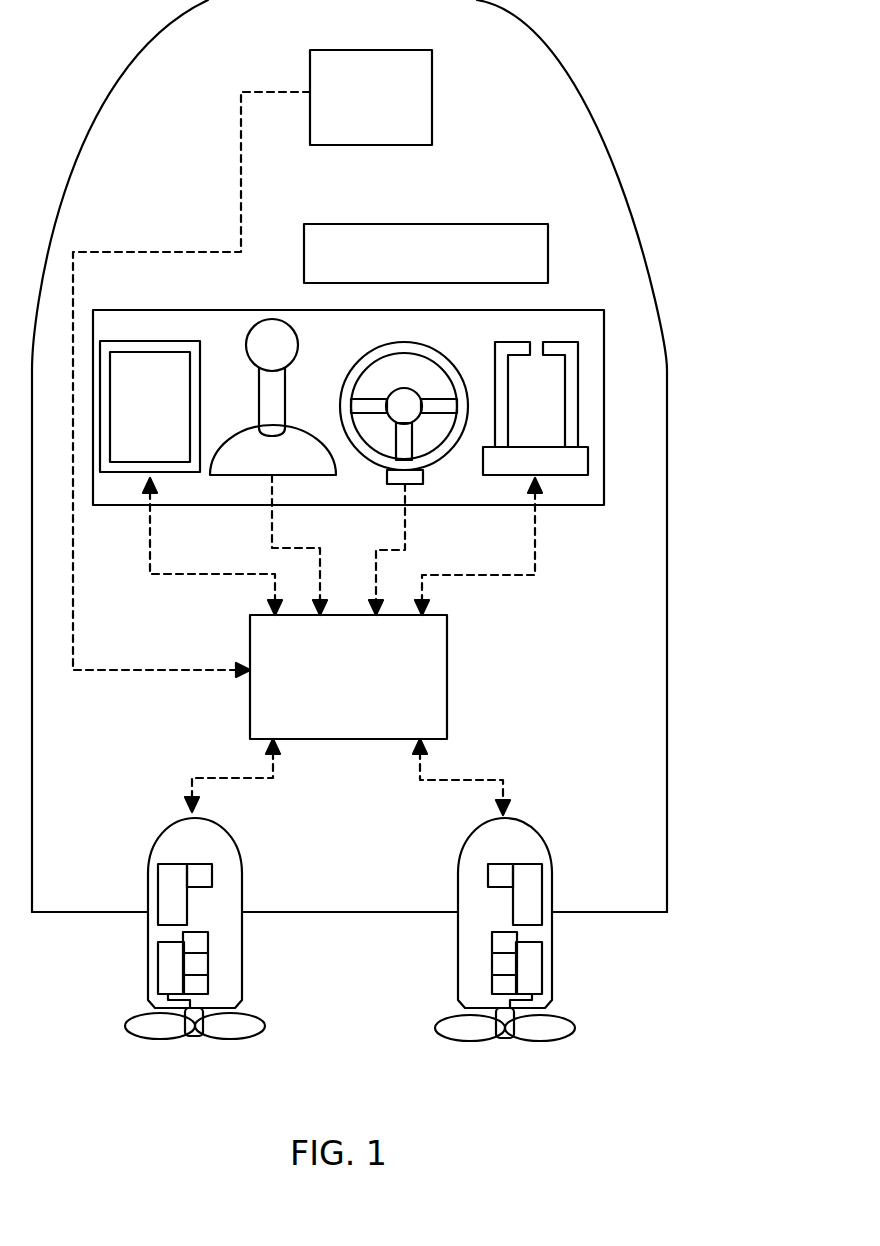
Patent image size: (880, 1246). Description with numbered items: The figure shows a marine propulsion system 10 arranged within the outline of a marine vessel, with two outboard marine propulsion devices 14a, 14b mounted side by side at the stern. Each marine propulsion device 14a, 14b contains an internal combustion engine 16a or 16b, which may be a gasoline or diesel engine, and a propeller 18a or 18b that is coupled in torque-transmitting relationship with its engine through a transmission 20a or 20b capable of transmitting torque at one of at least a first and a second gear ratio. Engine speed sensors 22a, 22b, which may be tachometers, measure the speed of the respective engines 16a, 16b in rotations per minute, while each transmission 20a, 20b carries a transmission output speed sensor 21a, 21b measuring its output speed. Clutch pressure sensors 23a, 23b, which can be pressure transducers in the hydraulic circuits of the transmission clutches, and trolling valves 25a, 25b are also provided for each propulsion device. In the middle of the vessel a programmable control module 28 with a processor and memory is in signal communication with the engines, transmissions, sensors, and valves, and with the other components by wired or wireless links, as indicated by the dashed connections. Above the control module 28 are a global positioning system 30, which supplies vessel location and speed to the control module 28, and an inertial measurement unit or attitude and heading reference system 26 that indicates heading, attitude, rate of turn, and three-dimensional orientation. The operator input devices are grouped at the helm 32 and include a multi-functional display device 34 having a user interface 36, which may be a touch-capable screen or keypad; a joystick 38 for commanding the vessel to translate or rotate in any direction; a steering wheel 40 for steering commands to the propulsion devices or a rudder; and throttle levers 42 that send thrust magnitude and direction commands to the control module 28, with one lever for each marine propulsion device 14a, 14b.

The marine propulsion system 10 is at (512, 638).
The marine propulsion device 14a is at (218, 828).
The marine propulsion device 14b is at (530, 832).
The engine 16a is at (157, 912).
The engine 16b is at (542, 918).
The propeller 18a is at (137, 1040).
The propeller 18b is at (555, 1040).
The transmission 20a is at (157, 975).
The transmission 20b is at (543, 968).
The transmission output speed sensor 21a is at (208, 982).
The transmission output speed sensor 21b is at (492, 987).
The engine speed sensor 22a is at (212, 874).
The engine speed sensor 22b is at (488, 878).
The clutch pressure sensor 23a is at (208, 963).
The clutch pressure sensor 23b is at (492, 966).
The trolling valve 25a is at (208, 942).
The trolling valve 25b is at (492, 940).
The inertial measurement unit or attitude and heading reference system 26 is at (445, 224).
The control module 28 is at (447, 686).
The global positioning system 30 is at (362, 50).
The helm 32 is at (537, 310).
The multi-functional display device 34 is at (122, 341).
The user interface 36 is at (190, 414).
The joystick 38 is at (285, 402).
The steering wheel 40 is at (408, 342).
The throttle lever 42 is at (602, 370).